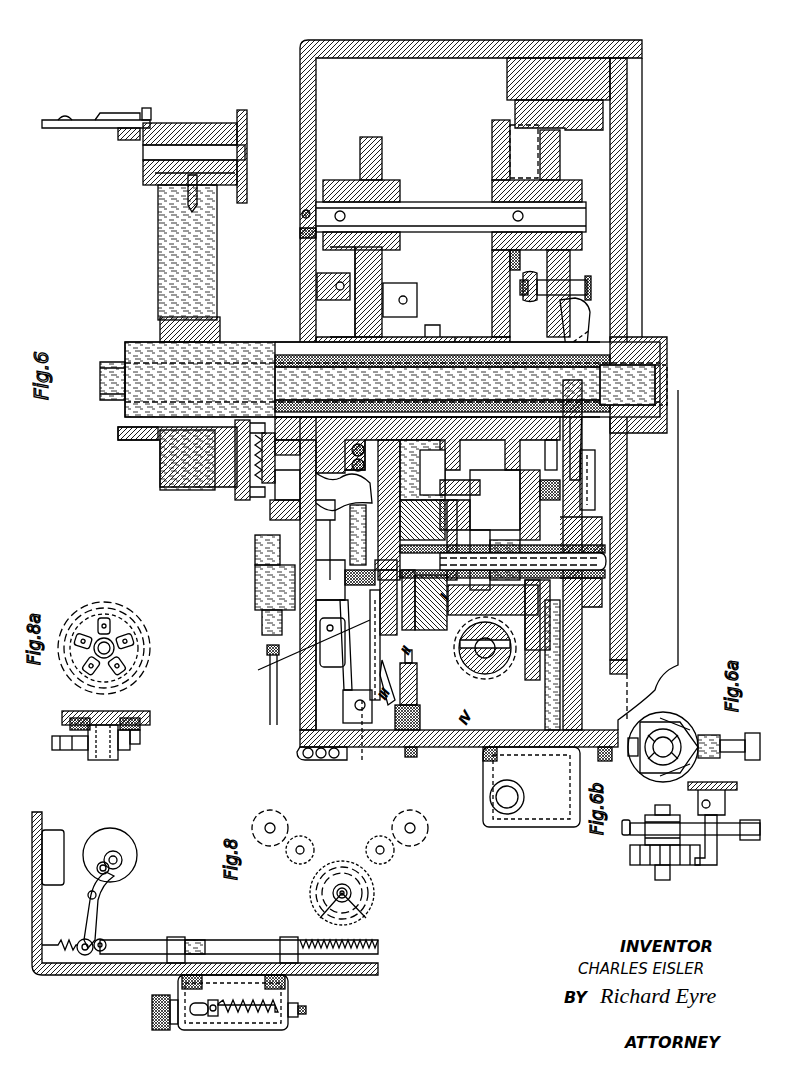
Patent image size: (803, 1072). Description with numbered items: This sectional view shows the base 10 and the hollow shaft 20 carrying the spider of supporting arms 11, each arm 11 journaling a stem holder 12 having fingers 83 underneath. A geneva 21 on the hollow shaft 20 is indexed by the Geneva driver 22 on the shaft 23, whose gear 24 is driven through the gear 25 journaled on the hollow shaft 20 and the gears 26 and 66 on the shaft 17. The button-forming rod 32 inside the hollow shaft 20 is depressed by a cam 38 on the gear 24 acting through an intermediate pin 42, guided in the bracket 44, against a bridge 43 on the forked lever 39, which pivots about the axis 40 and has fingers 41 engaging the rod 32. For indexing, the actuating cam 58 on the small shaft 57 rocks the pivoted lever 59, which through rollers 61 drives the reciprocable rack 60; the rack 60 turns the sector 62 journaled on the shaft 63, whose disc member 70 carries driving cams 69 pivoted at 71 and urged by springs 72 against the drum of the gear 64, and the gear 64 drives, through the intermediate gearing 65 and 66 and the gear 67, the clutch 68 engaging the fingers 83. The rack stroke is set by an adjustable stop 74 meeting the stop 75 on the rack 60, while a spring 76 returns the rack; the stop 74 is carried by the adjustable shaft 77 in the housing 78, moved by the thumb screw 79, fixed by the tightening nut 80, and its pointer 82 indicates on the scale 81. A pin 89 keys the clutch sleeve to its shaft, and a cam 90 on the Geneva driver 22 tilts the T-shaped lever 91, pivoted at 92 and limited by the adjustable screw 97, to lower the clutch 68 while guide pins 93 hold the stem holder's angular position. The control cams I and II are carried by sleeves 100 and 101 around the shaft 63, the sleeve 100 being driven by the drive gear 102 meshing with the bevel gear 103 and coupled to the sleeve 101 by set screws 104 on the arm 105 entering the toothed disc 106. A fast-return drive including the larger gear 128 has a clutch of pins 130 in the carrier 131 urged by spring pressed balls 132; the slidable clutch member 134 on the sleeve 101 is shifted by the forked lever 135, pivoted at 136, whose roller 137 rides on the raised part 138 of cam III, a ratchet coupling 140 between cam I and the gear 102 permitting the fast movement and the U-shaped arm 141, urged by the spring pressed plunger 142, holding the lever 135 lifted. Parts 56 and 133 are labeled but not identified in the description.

In FIG. 6, the main supporting frame or base 10 is at (301, 62).
In FIG. 6, the supporting arms 11 is at (165, 270).
In FIG. 6, the stem holder 12 is at (150, 180).
In FIG. 6, the shaft 17 is at (590, 480).
In FIG. 6, the hollow shaft 20 is at (118, 358).
In FIG. 6, the geneva 21 is at (395, 335).
In FIG. 6, the Geneva driver 22 is at (411, 285).
In FIG. 6, the shaft 23 is at (452, 203).
In FIG. 6, the gear 24 is at (490, 140).
In FIG. 6, the gear 25 is at (494, 330).
In FIG. 6, the gear 26 is at (500, 560).
In FIG. 6, the reciprocable rod 32 is at (105, 388).
In FIG. 6, the cam 38 is at (505, 280).
In FIG. 6, the forked lever 39 is at (582, 330).
In FIG. 6, the axis 40 is at (540, 160).
In FIG. 6, the fingers 41 is at (550, 452).
In FIG. 6, the intermediate pin 42 is at (540, 300).
In FIG. 6, the bridge 43 is at (588, 278).
In FIG. 6, the bracket 44 is at (532, 273).
In FIG. 8, the cam 56 is at (118, 832).
In FIG. 8, the small shaft 57 is at (122, 858).
In FIG. 8, the actuating cam 58 is at (118, 862).
In FIG. 8, the pivoted lever 59 is at (100, 902).
In FIG. 8, the reciprocable rack 60 is at (265, 942).
In FIG. 8, the rollers 61 is at (104, 862).
In FIG. 6, the sector or segment 62 is at (556, 660).
In FIG. 8A, the sector or segment 62 is at (80, 748).
In FIG. 8, the sector or segment 62 is at (370, 920).
In FIG. 6, the shaft 63 is at (592, 560).
In FIG. 8A, the shaft 63 is at (108, 718).
In FIG. 6, the gear 64 is at (548, 480).
In FIG. 8A, the gear 64 is at (64, 715).
In FIG. 8, the gear 64 is at (342, 862).
In FIG. 8, the intermediate gearing 65 is at (300, 855).
In FIG. 8, the gear 66 is at (290, 850).
In FIG. 8, the gear 67 is at (270, 826).
In FIG. 6, the clutch 68 is at (316, 470).
In FIG. 6, the driving cams 69 is at (537, 480).
In FIG. 8A, the driving cams 69 is at (100, 625).
In FIG. 8A, the disc member 70 is at (138, 740).
In FIG. 8A, the pivotal points 71 is at (128, 742).
In FIG. 8A, the springs 72 is at (88, 625).
In FIG. 8, the adjustable stop 74 is at (195, 960).
In FIG. 8, the stop 75 is at (222, 942).
In FIG. 8, the spring 76 is at (68, 942).
In FIG. 8, the adjustable shaft 77 is at (198, 1015).
In FIG. 8, the housing 78 is at (288, 1010).
In FIG. 8, the thumb screw 79 is at (165, 1020).
In FIG. 8, the tightening nut 80 is at (304, 1012).
In FIG. 8, the scale 81 is at (252, 1008).
In FIG. 8, the pointer 82 is at (215, 1012).
In FIG. 6, the fingers 83 is at (242, 480).
In FIG. 6, the pin 89 is at (362, 185).
In FIG. 6, the cam 90 is at (304, 218).
In FIG. 6, the T-shaped lever 91 is at (345, 320).
In FIG. 6, the pivot 92 is at (304, 262).
In FIG. 6, the guide pins 93 is at (258, 500).
In FIG. 6, the adjustable screw 97 is at (272, 495).
In FIG. 6, the sleeve 100 is at (470, 620).
In FIG. 6, the sleeve 101 is at (380, 650).
In FIG. 6, the drive gear 102 is at (480, 612).
In FIG. 6, the bevel gear 103 is at (480, 670).
In FIG. 6, the set screws 104 is at (266, 650).
In FIG. 6, the arm 105 is at (262, 620).
In FIG. 6, the circular toothed disc 106 is at (258, 600).
In FIG. 6, the larger gear 128 is at (292, 512).
In FIG. 6, the pins 130 is at (355, 585).
In FIG. 6, the carrier 131 is at (348, 690).
In FIG. 6, the spring pressed balls 132 is at (255, 548).
In FIG. 6, the bracket 133 is at (328, 667).
In FIG. 6B, the bracket 133 is at (698, 805).
In FIG. 6, the clutch member 134 is at (380, 585).
In FIG. 6B, the clutch member 134 is at (652, 820).
In FIG. 6, the operating forked lever 135 is at (365, 650).
In FIG. 6A, the operating forked lever 135 is at (688, 728).
In FIG. 6B, the operating forked lever 135 is at (735, 835).
In FIG. 6, the pivot 136 is at (364, 760).
In FIG. 8, the pivot 136 is at (369, 836).
In FIG. 6, the roller 137 is at (344, 519).
In FIG. 6A, the roller 137 is at (632, 748).
In FIG. 6B, the roller 137 is at (624, 832).
In FIG. 6, the raised part 138 is at (298, 656).
In FIG. 6, the ratchet coupling 140 is at (460, 490).
In FIG. 6, the U-shaped arm 141 is at (386, 682).
In FIG. 6B, the U-shaped arm 141 is at (715, 858).
In FIG. 6, the spring pressed plunger 142 is at (418, 680).